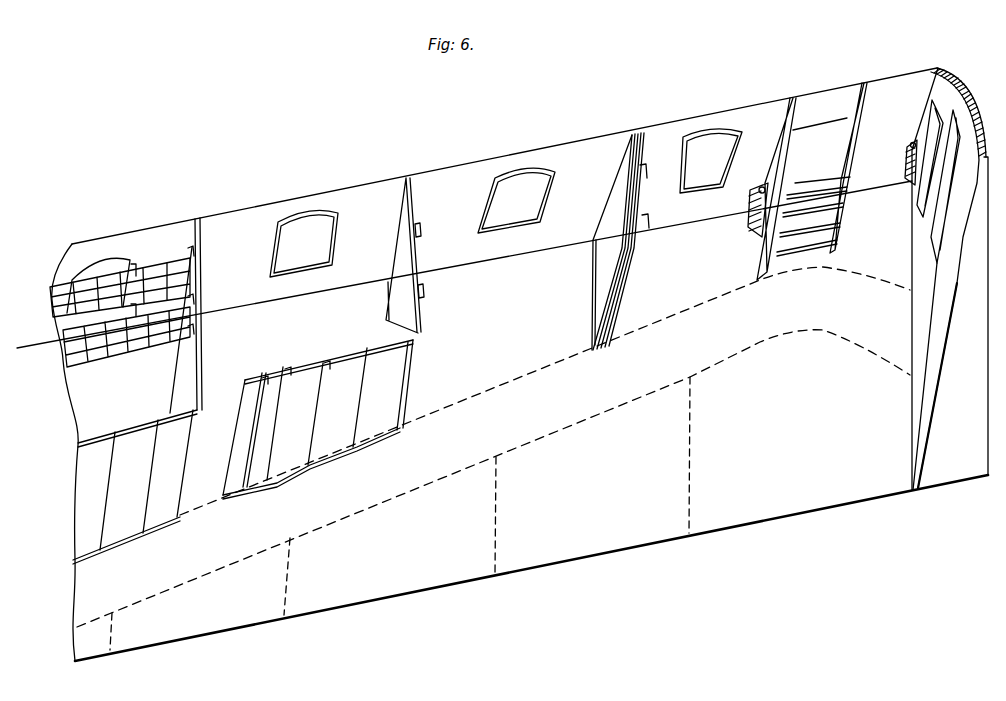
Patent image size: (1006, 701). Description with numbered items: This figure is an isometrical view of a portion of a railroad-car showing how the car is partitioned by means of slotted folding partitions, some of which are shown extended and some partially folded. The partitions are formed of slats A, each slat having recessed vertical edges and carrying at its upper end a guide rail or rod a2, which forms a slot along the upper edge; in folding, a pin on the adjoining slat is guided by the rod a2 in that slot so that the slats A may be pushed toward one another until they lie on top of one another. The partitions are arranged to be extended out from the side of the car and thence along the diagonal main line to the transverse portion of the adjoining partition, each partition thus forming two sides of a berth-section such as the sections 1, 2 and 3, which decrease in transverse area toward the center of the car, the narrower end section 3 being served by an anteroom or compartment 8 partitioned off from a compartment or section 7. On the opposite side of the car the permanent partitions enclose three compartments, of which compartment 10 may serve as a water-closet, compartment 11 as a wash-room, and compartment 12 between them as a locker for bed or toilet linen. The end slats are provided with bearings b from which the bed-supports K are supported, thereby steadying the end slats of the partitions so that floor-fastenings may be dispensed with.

The berth-section 1 is at (426, 411).
The berth-section 2 is at (426, 352).
The narrower end berth-section 3 is at (464, 362).
The compartment or section 7 is at (860, 83).
The anteroom or compartment 8 is at (493, 458).
The water-closet compartment 10 is at (867, 279).
The wash-room compartment 11 is at (456, 375).
The linen locker compartment 12 is at (465, 383).
The bed-supports K is at (147, 263).
The bearings b is at (192, 250).
The slats A is at (201, 240).
The guide rail or rod a2 is at (659, 152).